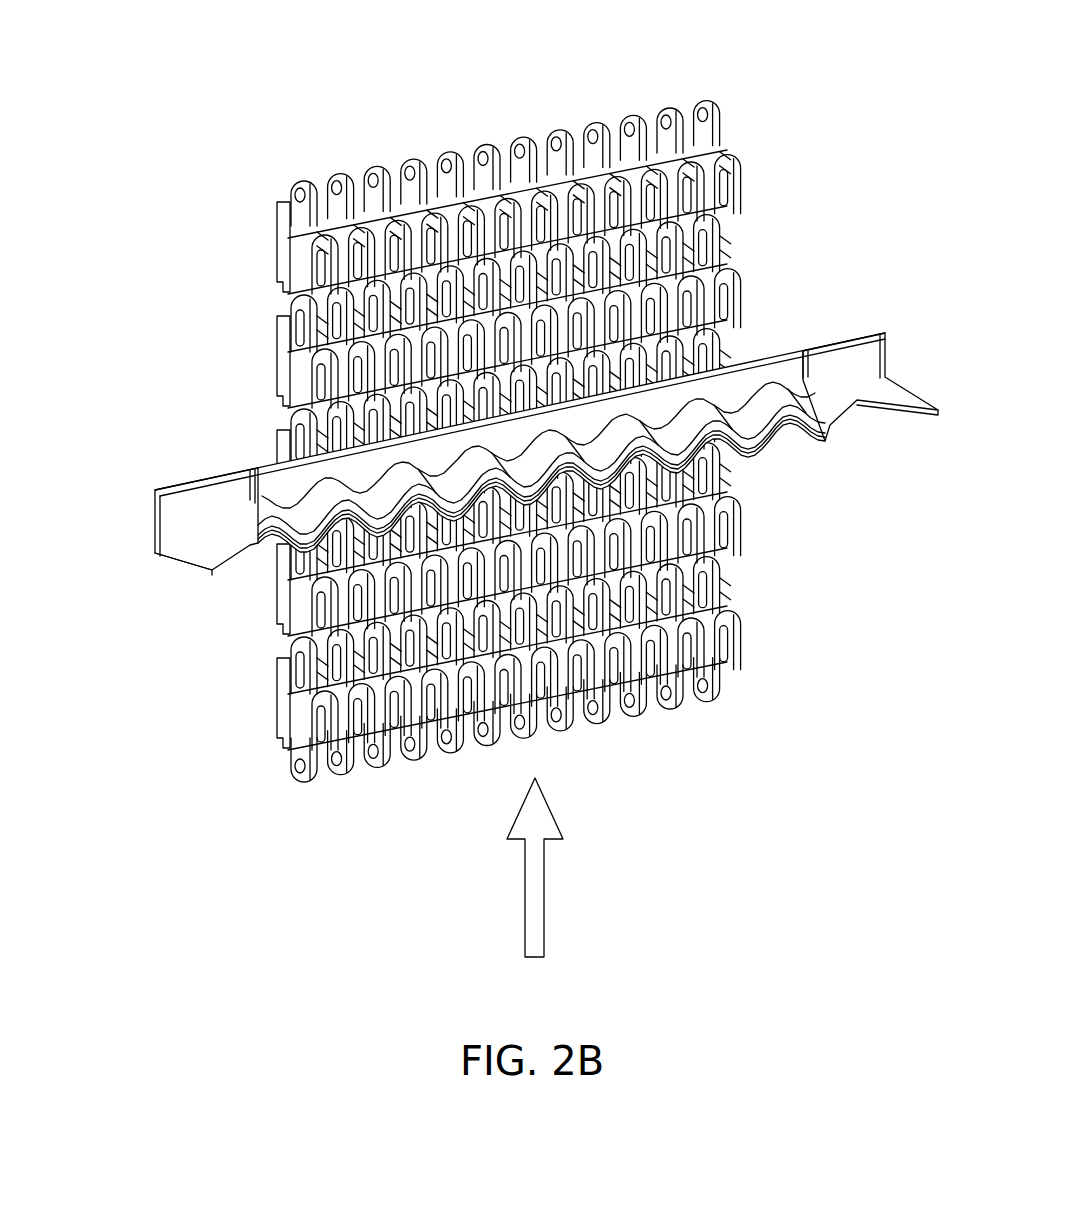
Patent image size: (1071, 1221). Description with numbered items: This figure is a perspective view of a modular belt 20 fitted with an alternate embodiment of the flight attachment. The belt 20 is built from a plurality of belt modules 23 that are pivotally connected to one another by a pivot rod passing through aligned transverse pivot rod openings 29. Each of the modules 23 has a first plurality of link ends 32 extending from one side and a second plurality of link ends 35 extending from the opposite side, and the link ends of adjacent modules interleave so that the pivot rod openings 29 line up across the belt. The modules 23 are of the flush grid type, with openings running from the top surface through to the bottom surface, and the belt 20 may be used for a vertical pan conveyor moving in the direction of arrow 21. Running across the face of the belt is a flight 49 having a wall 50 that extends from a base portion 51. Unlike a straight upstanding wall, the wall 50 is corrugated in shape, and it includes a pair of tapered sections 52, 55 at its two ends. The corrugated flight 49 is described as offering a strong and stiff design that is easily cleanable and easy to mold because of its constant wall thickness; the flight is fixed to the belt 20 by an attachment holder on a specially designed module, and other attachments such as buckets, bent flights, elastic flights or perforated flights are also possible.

The modular belt 20 is at (504, 435).
The arrow 21 is at (540, 895).
The belt modules 23 is at (285, 230).
The transverse pivot rod openings 29 is at (622, 126).
The first plurality of link ends 32 is at (333, 176).
The second plurality of link ends 35 is at (312, 782).
The flight 49 is at (742, 406).
The wall 50 is at (499, 382).
The base portion 51 is at (286, 482).
The tapered section 52 is at (210, 538).
The tapered section 55 is at (862, 386).